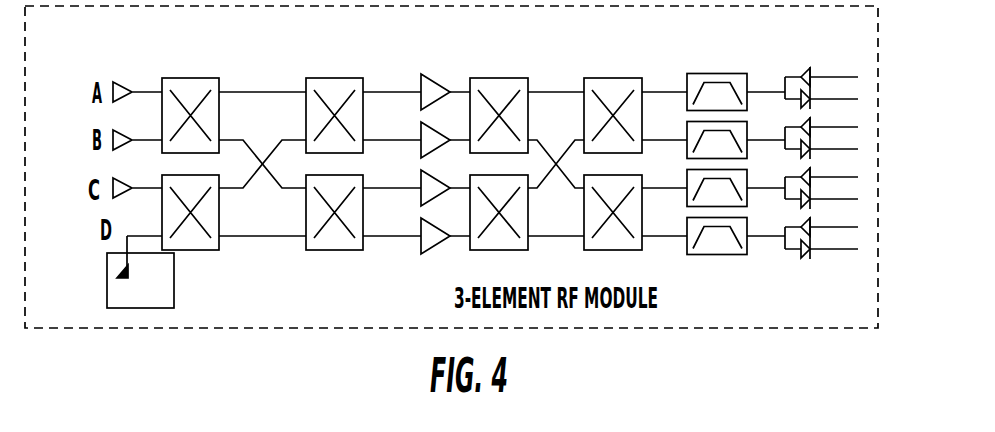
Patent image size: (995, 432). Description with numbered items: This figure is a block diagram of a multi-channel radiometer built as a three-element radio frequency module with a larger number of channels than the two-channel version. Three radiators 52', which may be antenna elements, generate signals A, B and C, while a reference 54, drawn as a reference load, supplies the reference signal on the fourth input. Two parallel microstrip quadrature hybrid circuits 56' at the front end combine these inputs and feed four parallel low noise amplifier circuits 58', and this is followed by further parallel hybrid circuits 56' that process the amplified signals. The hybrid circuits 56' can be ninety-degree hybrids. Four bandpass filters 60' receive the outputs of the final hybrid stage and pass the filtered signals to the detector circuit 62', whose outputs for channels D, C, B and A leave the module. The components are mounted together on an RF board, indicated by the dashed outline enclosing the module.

The radiators 52' is at (107, 108).
The reference 54 is at (128, 308).
The hybrid circuits 56' is at (420, 134).
The low noise amplifier circuits 58' is at (431, 164).
The bandpass filters 60' is at (717, 138).
The detector circuit 62' is at (802, 156).